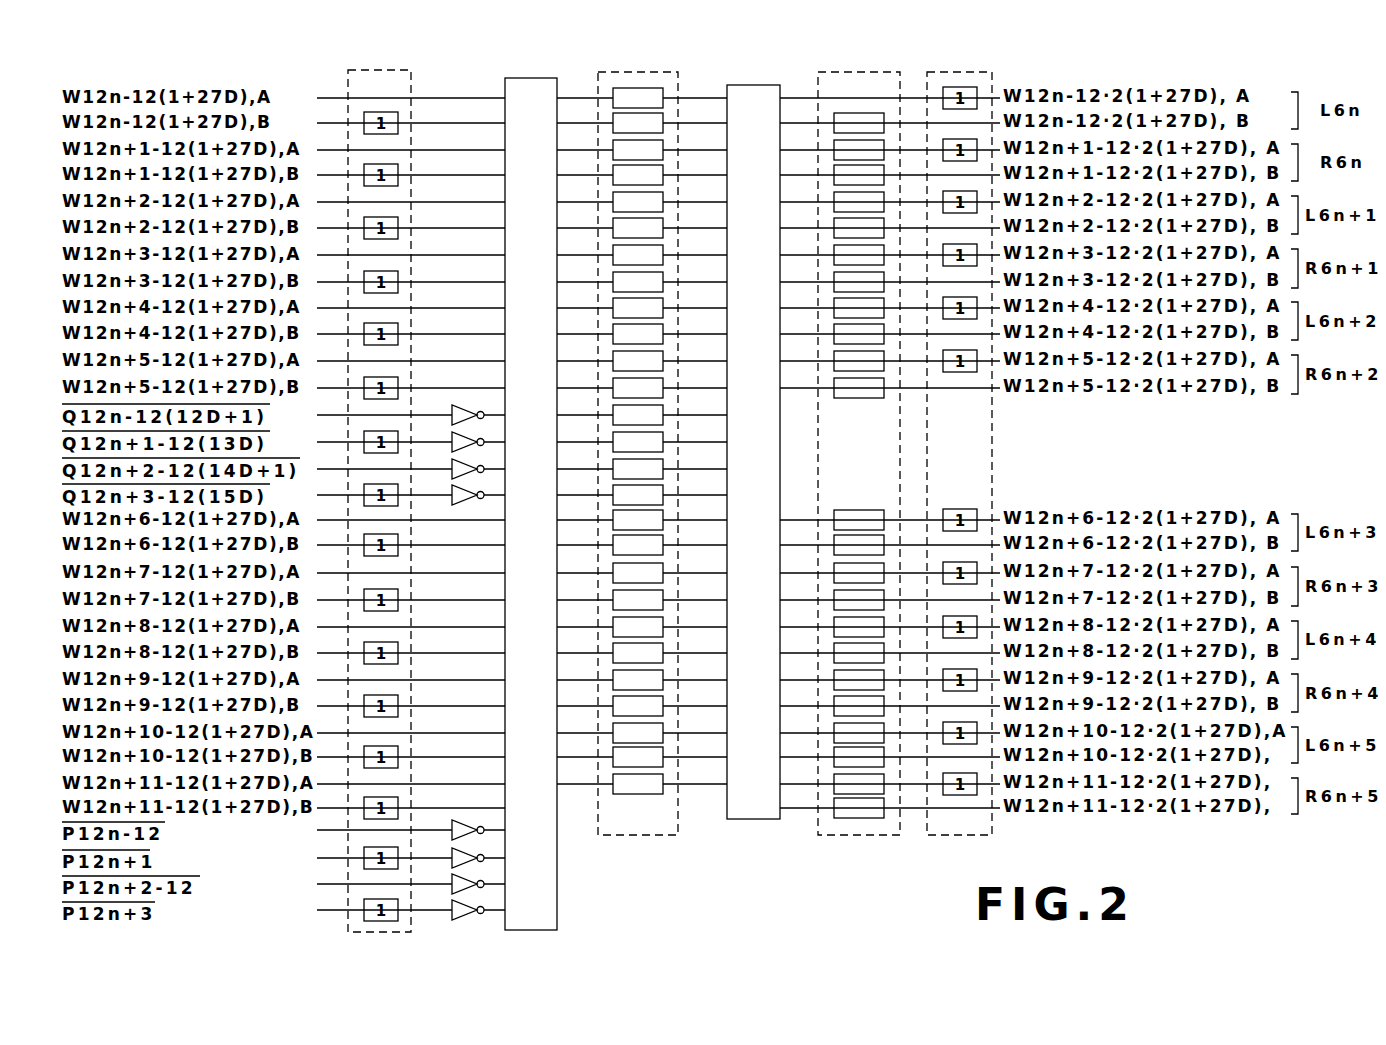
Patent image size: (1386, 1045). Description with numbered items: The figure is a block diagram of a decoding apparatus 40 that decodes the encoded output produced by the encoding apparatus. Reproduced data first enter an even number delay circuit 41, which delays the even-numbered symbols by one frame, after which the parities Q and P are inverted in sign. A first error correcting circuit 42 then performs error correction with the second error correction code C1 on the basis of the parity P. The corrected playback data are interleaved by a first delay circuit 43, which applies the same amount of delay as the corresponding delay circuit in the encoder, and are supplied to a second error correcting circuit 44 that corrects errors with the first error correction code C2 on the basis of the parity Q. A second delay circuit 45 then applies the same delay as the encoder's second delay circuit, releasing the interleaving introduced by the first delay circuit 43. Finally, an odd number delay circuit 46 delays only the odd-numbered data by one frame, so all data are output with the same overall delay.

The decoding apparatus 40 is at (699, 864).
The even number delay circuit 41 is at (345, 930).
The first error correcting circuit 42 is at (557, 916).
The first delay circuit 43 is at (658, 836).
The second error correcting circuit 44 is at (748, 819).
The second delay circuit 45 is at (814, 814).
The odd number delay circuit 46 is at (961, 836).